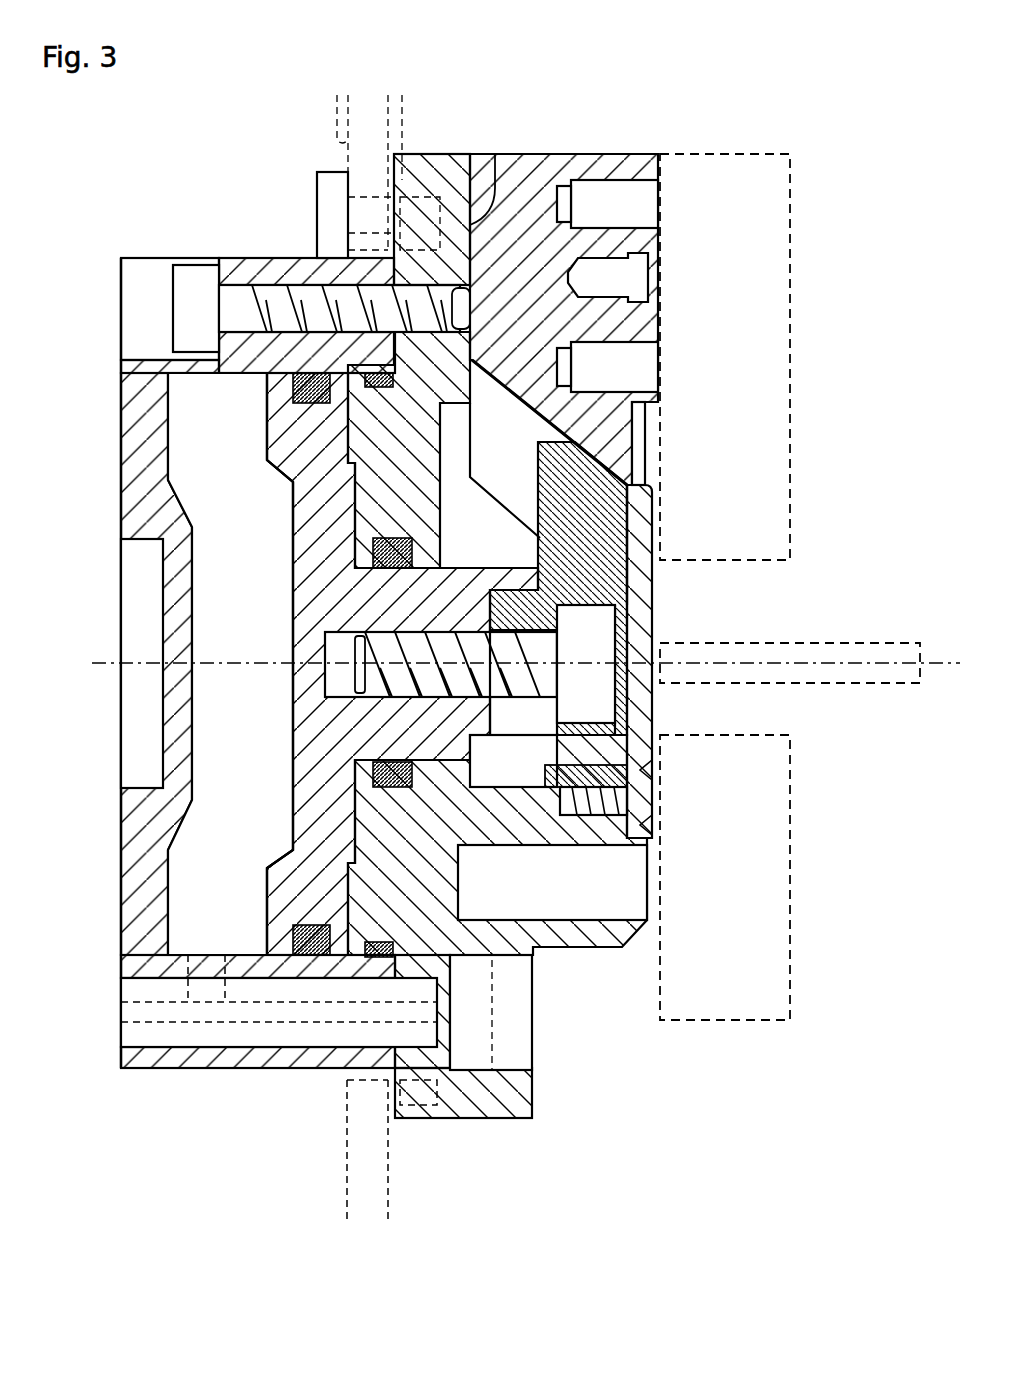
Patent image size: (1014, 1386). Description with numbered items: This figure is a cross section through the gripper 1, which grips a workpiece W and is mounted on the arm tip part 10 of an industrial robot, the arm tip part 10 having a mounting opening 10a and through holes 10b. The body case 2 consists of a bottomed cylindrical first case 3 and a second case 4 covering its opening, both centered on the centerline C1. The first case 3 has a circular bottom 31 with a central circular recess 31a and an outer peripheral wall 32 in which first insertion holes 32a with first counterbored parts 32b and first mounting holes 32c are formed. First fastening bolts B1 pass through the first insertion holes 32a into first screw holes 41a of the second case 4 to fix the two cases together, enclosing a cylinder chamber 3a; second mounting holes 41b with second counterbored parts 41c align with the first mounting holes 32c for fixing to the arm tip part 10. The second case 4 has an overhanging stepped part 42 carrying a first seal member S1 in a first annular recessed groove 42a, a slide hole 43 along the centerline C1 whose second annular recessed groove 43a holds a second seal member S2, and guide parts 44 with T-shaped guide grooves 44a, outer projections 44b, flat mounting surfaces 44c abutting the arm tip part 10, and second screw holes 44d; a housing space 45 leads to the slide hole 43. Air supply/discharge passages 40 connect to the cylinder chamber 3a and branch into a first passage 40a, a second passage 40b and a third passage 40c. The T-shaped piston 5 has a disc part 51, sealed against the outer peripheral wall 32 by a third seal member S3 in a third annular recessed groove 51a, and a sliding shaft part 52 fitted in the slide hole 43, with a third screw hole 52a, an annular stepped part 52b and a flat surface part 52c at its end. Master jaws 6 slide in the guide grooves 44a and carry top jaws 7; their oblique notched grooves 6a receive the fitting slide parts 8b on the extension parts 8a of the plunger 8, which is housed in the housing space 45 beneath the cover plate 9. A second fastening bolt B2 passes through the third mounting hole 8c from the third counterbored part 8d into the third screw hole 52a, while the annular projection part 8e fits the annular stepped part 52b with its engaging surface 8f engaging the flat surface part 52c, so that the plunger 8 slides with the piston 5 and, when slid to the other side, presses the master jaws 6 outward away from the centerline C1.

The gripper 1 is at (674, 72).
The body case 2 is at (290, 134).
The first case 3 is at (240, 257).
The cylinder chamber 3a is at (197, 906).
The second case 4 is at (392, 182).
The piston 5 is at (290, 700).
The master jaws 6 is at (603, 152).
The notched grooves 6a is at (590, 373).
The top jaws 7 is at (790, 268).
The plunger 8 is at (630, 574).
The extension parts 8a is at (627, 513).
The fitting slide parts 8b is at (600, 448).
The third mounting hole 8c is at (505, 835).
The third counterbored part 8d is at (590, 835).
The annular projection part 8e is at (615, 553).
The engaging surface 8f is at (530, 835).
The cover plate 9 is at (656, 620).
The arm tip part 10 is at (339, 116).
The mounting opening 10a is at (338, 1150).
The through holes 10b is at (404, 124).
The circular bottom 31 is at (120, 838).
The circular recess 31a is at (125, 541).
The outer peripheral wall 32 is at (248, 1060).
The first insertion holes 32a is at (218, 290).
The first counterbored parts 32b is at (165, 362).
The first mounting holes 32c is at (280, 1035).
The air supply/discharge passages 40 is at (200, 1020).
The first passage 40a is at (470, 1118).
The second passage 40b is at (425, 1120).
The third passage 40c is at (157, 1015).
The first screw holes 41a is at (468, 306).
The second mounting holes 41b is at (447, 1030).
The second counterbored parts 41c is at (535, 1090).
The overhanging stepped part 42 is at (420, 795).
The first annular recessed groove 42a is at (345, 925).
The slide hole 43 is at (455, 726).
The second annular recessed groove 43a is at (375, 775).
The guide parts 44 is at (455, 180).
The guide grooves 44a is at (488, 220).
The projections 44b is at (433, 152).
The mounting surfaces 44c is at (394, 152).
The second screw holes 44d is at (480, 268).
The housing space 45 is at (595, 446).
The disc part 51 is at (290, 880).
The third annular recessed groove 51a is at (268, 412).
The sliding shaft part 52 is at (452, 568).
The third screw hole 52a is at (330, 640).
The annular stepped part 52b is at (500, 720).
The flat surface part 52c is at (520, 700).
The first fastening bolts B1 is at (188, 305).
The second fastening bolt B2 is at (600, 720).
The centerline C1 is at (92, 663).
The first seal member S1 is at (396, 380).
The second seal member S2 is at (400, 552).
The third seal member S3 is at (290, 385).
The workpiece W is at (895, 645).